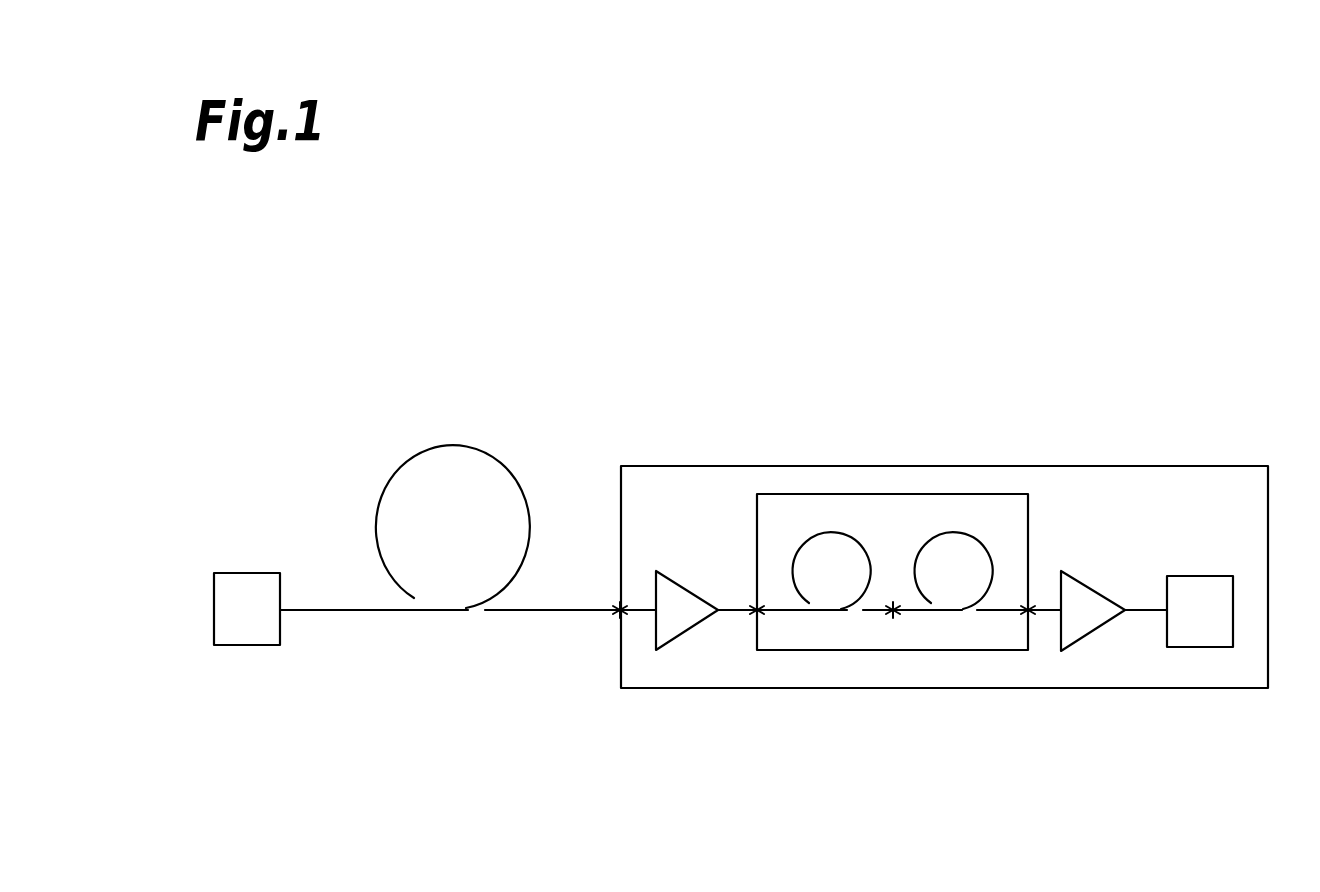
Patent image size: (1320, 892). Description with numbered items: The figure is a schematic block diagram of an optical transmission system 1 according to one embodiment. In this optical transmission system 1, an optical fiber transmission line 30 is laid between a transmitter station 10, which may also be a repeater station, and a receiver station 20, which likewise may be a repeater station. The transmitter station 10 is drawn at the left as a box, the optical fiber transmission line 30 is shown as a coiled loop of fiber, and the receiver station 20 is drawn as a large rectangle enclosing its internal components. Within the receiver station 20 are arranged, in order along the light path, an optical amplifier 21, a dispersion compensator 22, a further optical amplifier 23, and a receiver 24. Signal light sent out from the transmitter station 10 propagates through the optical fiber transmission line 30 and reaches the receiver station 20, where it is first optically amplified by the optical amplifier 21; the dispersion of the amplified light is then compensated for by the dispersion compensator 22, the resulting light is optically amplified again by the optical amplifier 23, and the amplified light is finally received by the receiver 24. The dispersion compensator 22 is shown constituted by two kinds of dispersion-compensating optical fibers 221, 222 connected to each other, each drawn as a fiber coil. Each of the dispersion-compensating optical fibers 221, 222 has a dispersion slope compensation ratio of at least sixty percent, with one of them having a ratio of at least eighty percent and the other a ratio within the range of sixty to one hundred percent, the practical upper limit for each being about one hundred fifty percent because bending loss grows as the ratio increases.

The optical transmission system 1 is at (707, 380).
The transmitter station 10 is at (244, 573).
The optical fiber transmission line 30 is at (452, 445).
The receiver station 20 is at (908, 466).
The optical amplifier 21 is at (687, 637).
The dispersion compensator 22 is at (887, 650).
The dispersion-compensating optical fiber 221 is at (833, 531).
The dispersion-compensating optical fiber 222 is at (963, 531).
The optical amplifier 23 is at (1087, 637).
The receiver 24 is at (1203, 647).